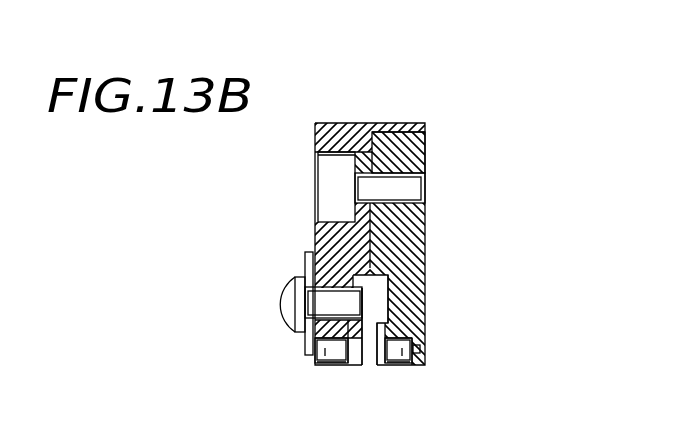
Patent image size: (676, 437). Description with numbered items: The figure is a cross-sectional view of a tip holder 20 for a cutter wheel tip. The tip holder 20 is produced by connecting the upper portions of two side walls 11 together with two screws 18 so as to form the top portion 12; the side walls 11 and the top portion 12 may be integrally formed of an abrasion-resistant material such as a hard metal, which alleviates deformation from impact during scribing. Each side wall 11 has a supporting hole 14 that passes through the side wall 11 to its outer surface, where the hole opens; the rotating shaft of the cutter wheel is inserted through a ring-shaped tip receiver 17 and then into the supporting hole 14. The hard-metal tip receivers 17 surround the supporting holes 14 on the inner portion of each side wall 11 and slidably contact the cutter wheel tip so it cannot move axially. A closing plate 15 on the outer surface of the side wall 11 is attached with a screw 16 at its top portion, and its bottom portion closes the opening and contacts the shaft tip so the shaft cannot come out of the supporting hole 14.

The tip holder 20 is at (455, 93).
The side wall 11 is at (318, 250).
The top portion 12 is at (426, 148).
The screw 18 is at (333, 173).
The screw 16 is at (282, 303).
The closing plate 15 is at (302, 342).
The supporting hole 14 is at (323, 366).
The ring-shaped tip receiver 17 is at (353, 366).